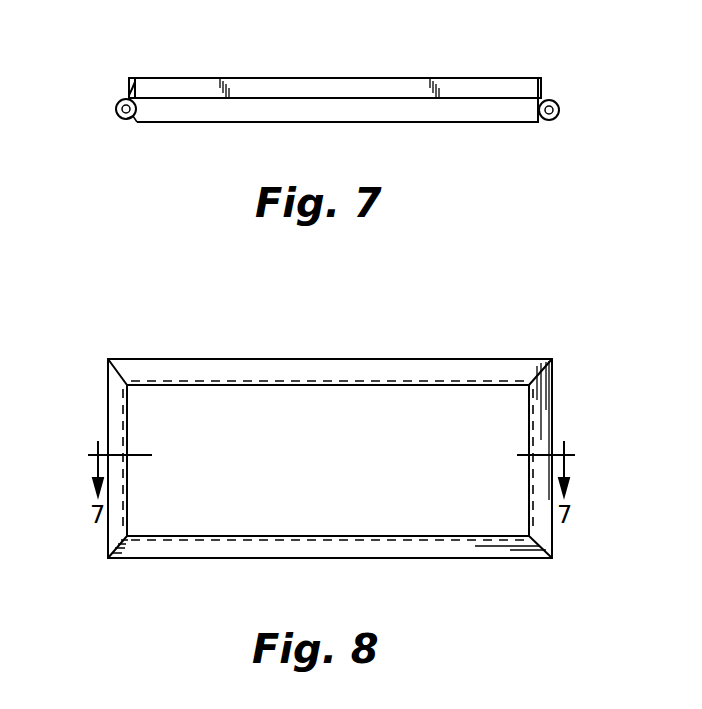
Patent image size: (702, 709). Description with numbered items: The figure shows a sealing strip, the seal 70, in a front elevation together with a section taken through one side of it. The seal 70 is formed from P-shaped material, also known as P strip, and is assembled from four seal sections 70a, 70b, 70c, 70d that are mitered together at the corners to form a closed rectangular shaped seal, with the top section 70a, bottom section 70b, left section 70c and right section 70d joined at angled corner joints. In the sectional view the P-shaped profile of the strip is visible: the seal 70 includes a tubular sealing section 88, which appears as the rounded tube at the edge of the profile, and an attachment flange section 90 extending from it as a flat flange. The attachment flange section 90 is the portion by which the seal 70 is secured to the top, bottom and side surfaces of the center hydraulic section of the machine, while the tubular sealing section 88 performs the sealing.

In FIG. 7, the seal 70 is at (374, 72).
In FIG. 8, the seal 70 is at (375, 357).
In FIG. 8, the seal section 70a is at (243, 368).
In FIG. 8, the seal section 70b is at (298, 552).
In FIG. 8, the seal section 70c is at (117, 435).
In FIG. 8, the seal section 70d is at (557, 538).
In FIG. 7, the tubular sealing section 88 is at (121, 121).
In FIG. 7, the attachment flange section 90 is at (143, 78).